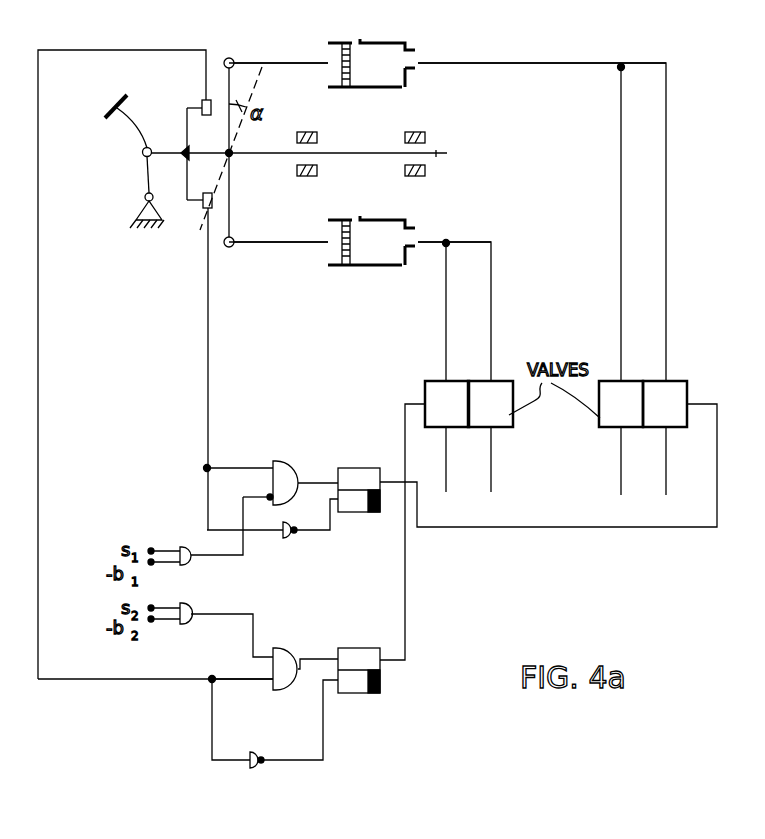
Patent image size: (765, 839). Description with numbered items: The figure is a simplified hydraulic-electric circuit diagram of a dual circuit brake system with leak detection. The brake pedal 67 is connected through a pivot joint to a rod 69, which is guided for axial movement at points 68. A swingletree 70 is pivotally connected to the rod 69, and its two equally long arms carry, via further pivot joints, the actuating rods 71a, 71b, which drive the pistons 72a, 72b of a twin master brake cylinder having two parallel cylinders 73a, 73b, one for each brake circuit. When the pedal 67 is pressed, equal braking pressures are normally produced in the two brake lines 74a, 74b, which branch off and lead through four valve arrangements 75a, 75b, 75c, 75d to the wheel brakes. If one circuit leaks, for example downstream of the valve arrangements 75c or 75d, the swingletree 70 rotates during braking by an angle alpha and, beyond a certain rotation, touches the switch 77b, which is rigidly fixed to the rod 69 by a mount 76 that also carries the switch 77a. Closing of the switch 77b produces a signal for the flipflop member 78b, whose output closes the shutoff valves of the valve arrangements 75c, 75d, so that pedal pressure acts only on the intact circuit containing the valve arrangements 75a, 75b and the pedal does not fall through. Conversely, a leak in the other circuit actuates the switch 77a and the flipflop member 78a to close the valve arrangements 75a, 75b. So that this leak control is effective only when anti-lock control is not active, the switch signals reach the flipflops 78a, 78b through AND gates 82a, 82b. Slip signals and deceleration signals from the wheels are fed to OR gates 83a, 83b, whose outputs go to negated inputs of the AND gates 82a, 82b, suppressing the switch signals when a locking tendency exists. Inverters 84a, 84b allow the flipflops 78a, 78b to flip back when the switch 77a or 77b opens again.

The brake pedal 67 is at (140, 138).
The guide points 68 is at (413, 148).
The rod 69 is at (436, 157).
The swingletree 70 is at (231, 214).
The actuating rod 71a is at (269, 62).
The actuating rod 71b is at (290, 247).
The piston 72a is at (350, 60).
The piston 72b is at (352, 253).
The cylinder 73a is at (392, 58).
The cylinder 73b is at (400, 255).
The brake line 74a is at (530, 68).
The brake line 74b is at (470, 243).
The valve arrangement 75a is at (447, 404).
The valve arrangement 75b is at (490, 404).
The valve arrangement 75c is at (621, 404).
The valve arrangement 75d is at (665, 404).
The mount 76 is at (184, 182).
The switch 77a is at (202, 103).
The switch 77b is at (207, 213).
The flipflop member 78a is at (353, 685).
The flipflop member 78b is at (352, 465).
The AND gate 82a is at (280, 692).
The AND gate 82b is at (285, 458).
The OR gate 83a is at (193, 605).
The OR gate 83b is at (192, 567).
The inverter 84a is at (262, 770).
The inverter 84b is at (292, 540).